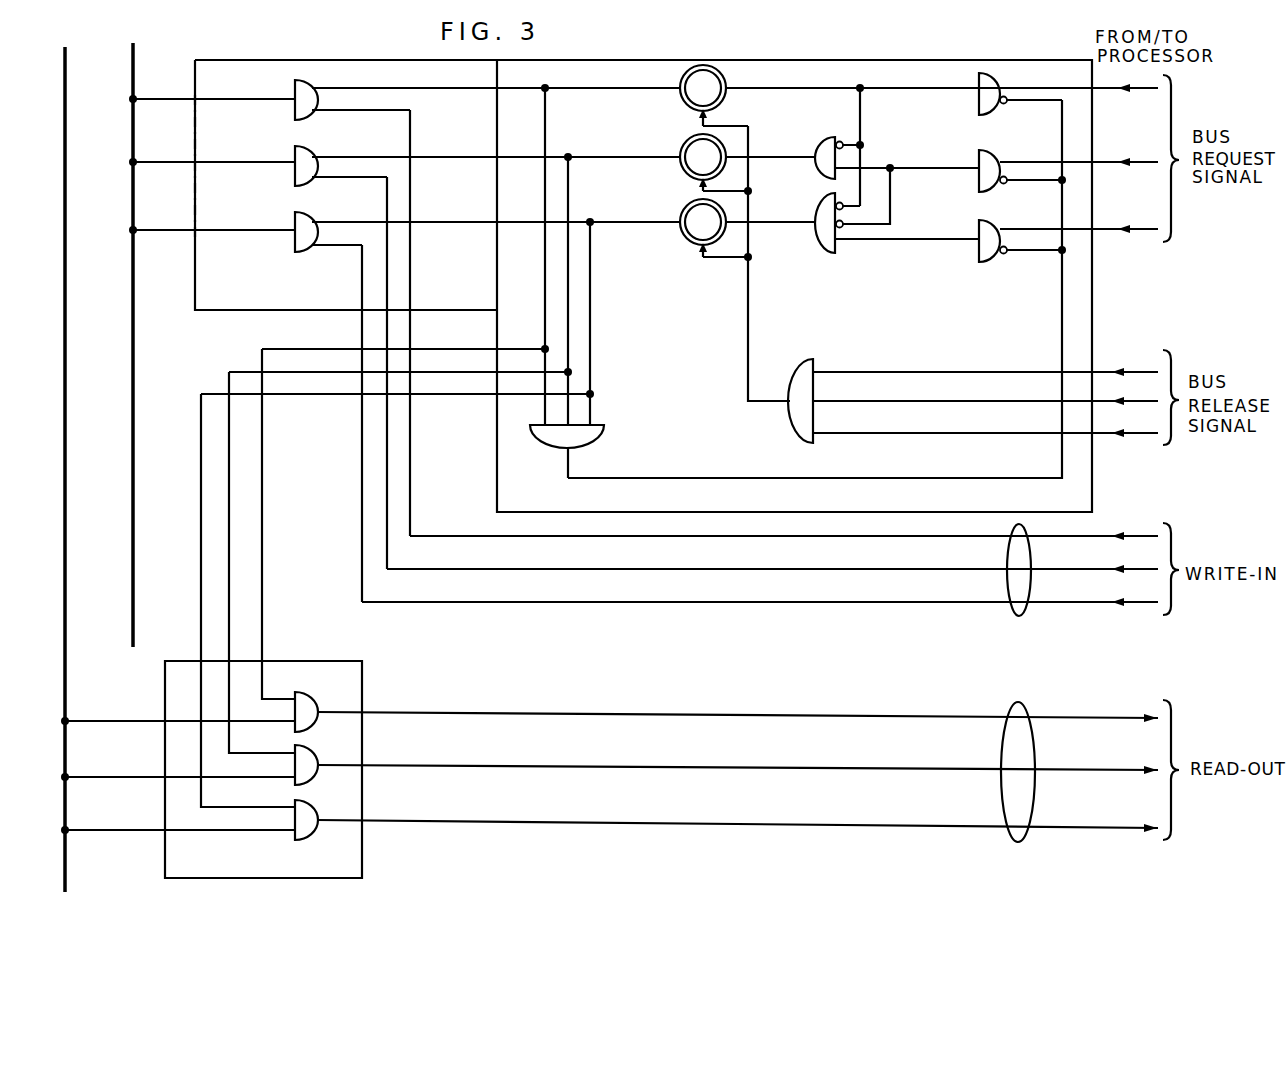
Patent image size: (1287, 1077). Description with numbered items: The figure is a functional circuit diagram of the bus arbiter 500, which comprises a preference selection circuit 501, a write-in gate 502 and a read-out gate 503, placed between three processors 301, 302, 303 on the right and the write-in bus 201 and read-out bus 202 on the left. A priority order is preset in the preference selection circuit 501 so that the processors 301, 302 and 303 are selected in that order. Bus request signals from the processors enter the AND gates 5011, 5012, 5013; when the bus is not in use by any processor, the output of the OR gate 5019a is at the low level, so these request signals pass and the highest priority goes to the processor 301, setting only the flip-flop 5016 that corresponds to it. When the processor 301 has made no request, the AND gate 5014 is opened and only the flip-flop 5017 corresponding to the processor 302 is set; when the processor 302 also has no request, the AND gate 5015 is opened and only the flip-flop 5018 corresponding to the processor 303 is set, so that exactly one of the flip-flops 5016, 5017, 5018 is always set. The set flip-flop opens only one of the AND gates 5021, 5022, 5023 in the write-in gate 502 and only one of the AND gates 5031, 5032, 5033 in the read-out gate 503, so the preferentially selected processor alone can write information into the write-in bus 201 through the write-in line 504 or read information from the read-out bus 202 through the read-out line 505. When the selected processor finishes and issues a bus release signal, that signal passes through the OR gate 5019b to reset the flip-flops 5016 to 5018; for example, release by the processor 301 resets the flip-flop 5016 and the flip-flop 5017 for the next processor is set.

The write-in bus 201 is at (145, 70).
The read-out bus 202 is at (67, 84).
The processor 301 is at (737, 403).
The processor 302 is at (737, 466).
The processor 303 is at (737, 528).
The bus arbiter 500 is at (746, 51).
The preference selection circuit 501 is at (805, 72).
The write-in gate 502 is at (305, 58).
The read-out gate 503 is at (362, 866).
The write-in line 504 is at (1022, 612).
The read-out line 505 is at (1010, 840).
The AND gate 5011 is at (978, 110).
The AND gate 5012 is at (985, 186).
The AND gate 5013 is at (985, 262).
The AND gate 5014 is at (820, 175).
The AND gate 5015 is at (818, 253).
The flip-flop 5016 is at (681, 98).
The flip-flop 5017 is at (681, 168).
The flip-flop 5018 is at (682, 236).
The OR gate 5019a is at (586, 446).
The OR gate 5019b is at (790, 418).
The AND gate 5021 is at (296, 86).
The AND gate 5022 is at (296, 151).
The AND gate 5023 is at (284, 211).
The AND gate 5031 is at (322, 689).
The AND gate 5032 is at (332, 745).
The AND gate 5033 is at (330, 800).